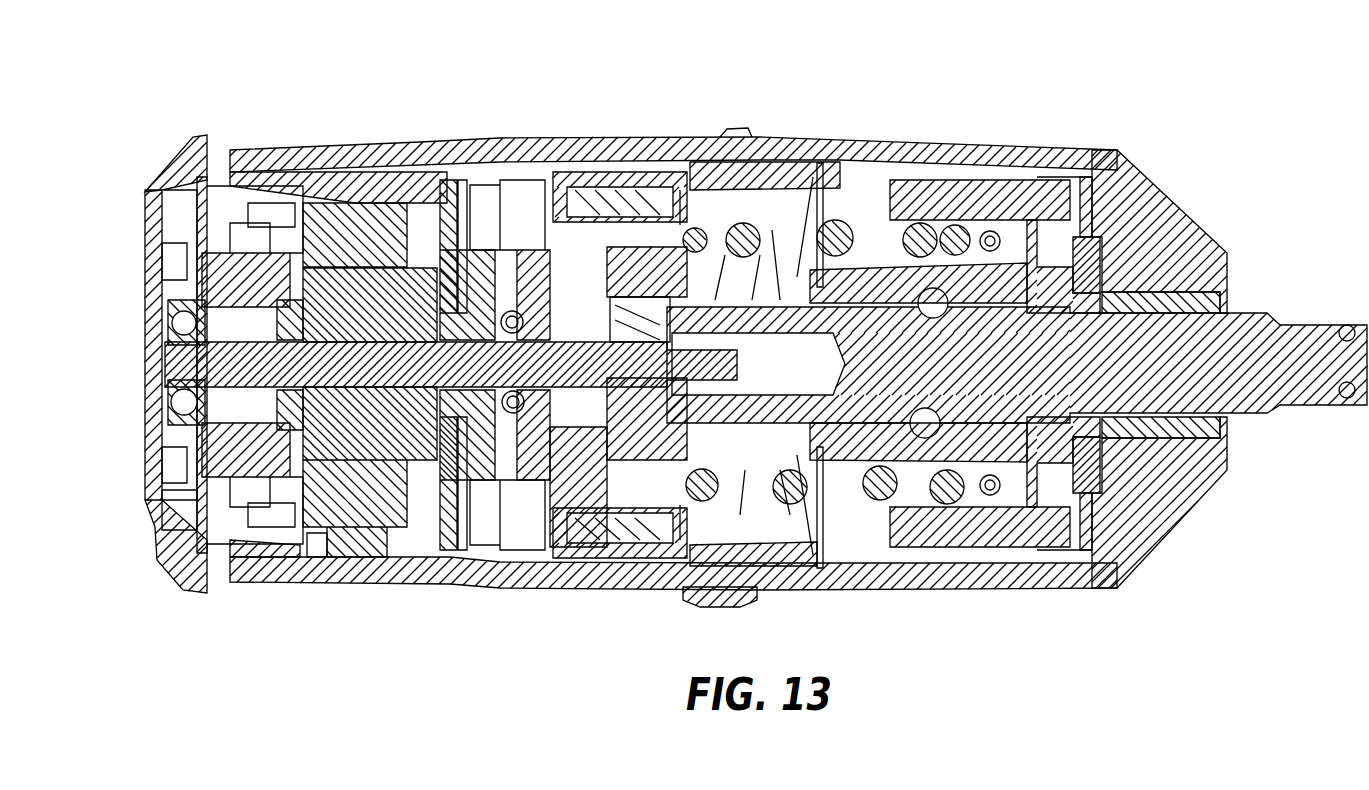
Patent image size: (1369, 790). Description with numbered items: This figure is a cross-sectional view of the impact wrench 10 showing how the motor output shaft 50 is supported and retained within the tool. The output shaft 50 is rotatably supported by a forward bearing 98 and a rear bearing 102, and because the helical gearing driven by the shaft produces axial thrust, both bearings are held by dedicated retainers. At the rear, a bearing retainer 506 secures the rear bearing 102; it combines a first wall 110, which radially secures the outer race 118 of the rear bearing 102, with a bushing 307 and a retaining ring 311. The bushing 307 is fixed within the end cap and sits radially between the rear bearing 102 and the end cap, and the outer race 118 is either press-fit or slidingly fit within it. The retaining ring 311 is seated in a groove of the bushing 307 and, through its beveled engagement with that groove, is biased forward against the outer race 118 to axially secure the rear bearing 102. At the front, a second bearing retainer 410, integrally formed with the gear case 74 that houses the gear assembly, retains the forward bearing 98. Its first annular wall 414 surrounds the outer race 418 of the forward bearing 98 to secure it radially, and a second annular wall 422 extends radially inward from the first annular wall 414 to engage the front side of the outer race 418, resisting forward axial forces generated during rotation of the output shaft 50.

The impact wrench 10 is at (200, 665).
The motor output shaft 50 is at (372, 345).
The gear case 74 is at (640, 172).
The forward bearing 98 is at (550, 243).
The rear bearing 102 is at (185, 323).
The first wall 110 is at (158, 511).
The outer race 118 is at (150, 440).
The bushing 307 is at (150, 233).
The retaining ring 311 is at (160, 403).
The second bearing retainer 410 is at (550, 200).
The first annular wall 414 is at (538, 427).
The outer race 418 is at (497, 290).
The second annular wall 422 is at (580, 462).
The bearing retainer 506 is at (127, 277).